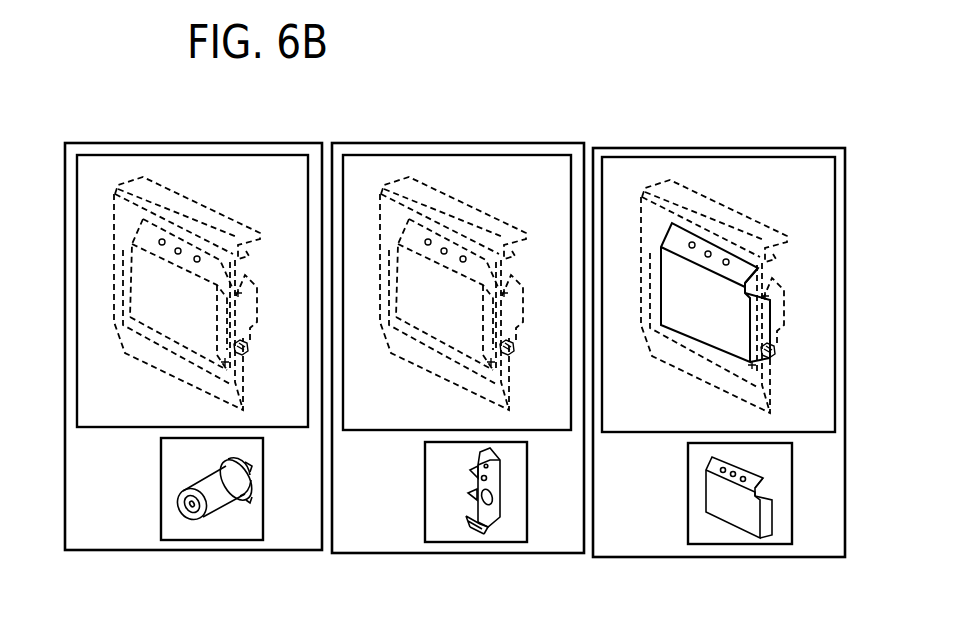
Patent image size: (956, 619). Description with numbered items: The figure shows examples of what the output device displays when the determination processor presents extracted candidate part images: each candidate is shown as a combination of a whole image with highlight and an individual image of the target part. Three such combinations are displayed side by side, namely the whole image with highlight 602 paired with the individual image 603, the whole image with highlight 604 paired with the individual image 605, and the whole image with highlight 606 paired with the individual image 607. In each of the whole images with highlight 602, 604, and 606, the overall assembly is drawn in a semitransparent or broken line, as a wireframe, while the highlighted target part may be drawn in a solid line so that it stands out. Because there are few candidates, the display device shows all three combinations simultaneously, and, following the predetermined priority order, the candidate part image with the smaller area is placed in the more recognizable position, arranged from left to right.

The whole image with highlight 602 is at (266, 155).
The individual image 603 is at (161, 481).
The whole image with highlight 604 is at (531, 155).
The individual image 605 is at (425, 483).
The whole image with highlight 606 is at (788, 157).
The individual image 607 is at (688, 485).